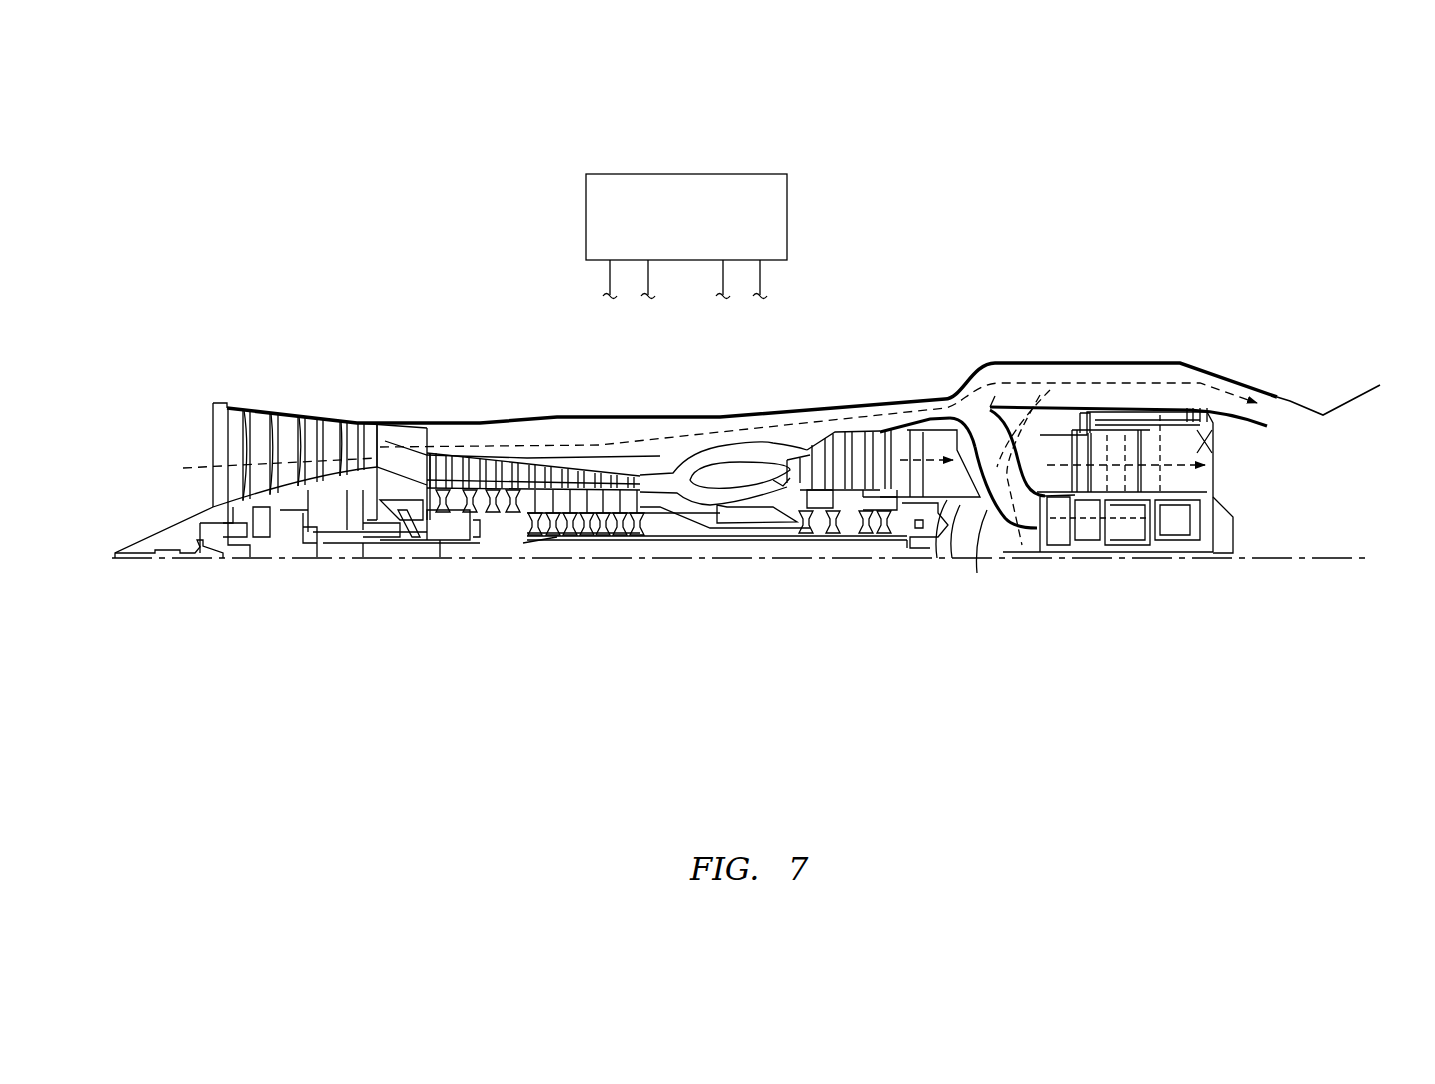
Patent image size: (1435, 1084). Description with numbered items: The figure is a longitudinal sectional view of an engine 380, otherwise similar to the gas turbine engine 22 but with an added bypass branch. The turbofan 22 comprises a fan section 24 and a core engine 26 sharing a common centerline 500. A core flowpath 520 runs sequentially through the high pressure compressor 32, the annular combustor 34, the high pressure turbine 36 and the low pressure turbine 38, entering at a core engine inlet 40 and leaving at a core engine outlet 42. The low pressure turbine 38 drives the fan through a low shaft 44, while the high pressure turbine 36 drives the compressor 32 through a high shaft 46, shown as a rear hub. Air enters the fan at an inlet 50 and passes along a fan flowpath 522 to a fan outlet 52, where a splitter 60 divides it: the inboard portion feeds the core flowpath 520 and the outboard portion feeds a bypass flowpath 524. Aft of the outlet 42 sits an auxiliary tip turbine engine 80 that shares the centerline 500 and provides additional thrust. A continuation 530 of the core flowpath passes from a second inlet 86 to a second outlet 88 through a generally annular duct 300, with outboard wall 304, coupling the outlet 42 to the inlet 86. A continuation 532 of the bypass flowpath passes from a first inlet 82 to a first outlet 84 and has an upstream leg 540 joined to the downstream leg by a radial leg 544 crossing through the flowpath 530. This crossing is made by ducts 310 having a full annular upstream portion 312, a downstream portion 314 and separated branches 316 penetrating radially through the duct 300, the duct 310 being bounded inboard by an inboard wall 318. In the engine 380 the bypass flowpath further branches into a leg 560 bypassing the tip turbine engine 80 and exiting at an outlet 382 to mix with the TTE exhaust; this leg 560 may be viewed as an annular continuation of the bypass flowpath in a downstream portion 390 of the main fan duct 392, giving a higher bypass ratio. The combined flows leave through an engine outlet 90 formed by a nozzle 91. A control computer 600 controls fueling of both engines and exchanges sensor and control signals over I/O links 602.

The gas turbine engine 22 is at (115, 659).
The fan section 24 is at (213, 393).
The core engine 26 is at (410, 603).
The high pressure compressor 32 is at (578, 476).
The annular combustor 34 is at (733, 458).
The high pressure turbine 36 is at (808, 438).
The low pressure turbine 38 is at (898, 446).
The core engine inlet 40 is at (411, 466).
The core engine outlet 42 is at (928, 478).
The low shaft 44 is at (757, 538).
The high shaft 46 is at (668, 526).
The fan inlet 50 is at (200, 490).
The fan outlet 52 is at (386, 427).
The splitter 60 is at (402, 402).
The auxiliary gas turbine engine 80 is at (1043, 597).
The first inlet 82 is at (1036, 527).
The first outlet 84 is at (1223, 426).
The second inlet 86 is at (1071, 446).
The second outlet 88 is at (1220, 471).
The engine outlet 90 is at (1370, 446).
The nozzle 91 is at (1323, 380).
The annular duct 300 is at (1028, 416).
The outboard wall 304 is at (1062, 445).
The ducts 310 is at (995, 396).
The upstream portion 312 is at (947, 396).
The downstream portion 314 is at (1035, 531).
The branches 316 is at (1021, 416).
The inboard wall 318 is at (1015, 526).
The engine 380 is at (806, 746).
The outlet 382 is at (1275, 406).
The downstream portion of main fan duct 390 is at (1187, 355).
The main fan duct 392 is at (655, 405).
The centerline 500 is at (273, 560).
The core flowpath 520 is at (883, 416).
The fan flowpath 522 is at (200, 464).
The bypass flowpath 524 is at (537, 443).
The core flowpath continuation 530 is at (1050, 390).
The bypass flowpath continuation 532 is at (1025, 527).
The upstream leg 540 is at (1090, 522).
The radial leg 544 is at (1205, 481).
The bypass leg 560 is at (1175, 366).
The control computer 600 is at (668, 222).
The I/O links 602 is at (760, 277).